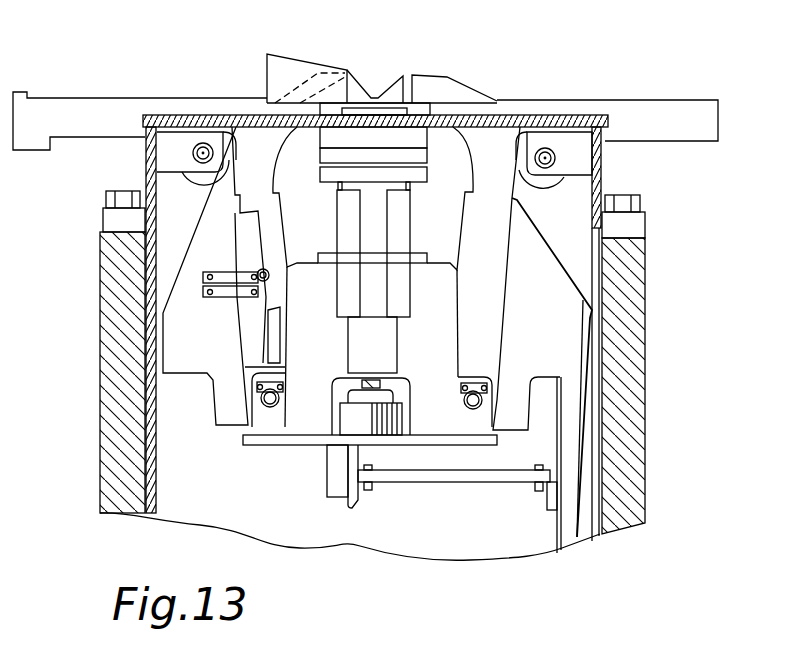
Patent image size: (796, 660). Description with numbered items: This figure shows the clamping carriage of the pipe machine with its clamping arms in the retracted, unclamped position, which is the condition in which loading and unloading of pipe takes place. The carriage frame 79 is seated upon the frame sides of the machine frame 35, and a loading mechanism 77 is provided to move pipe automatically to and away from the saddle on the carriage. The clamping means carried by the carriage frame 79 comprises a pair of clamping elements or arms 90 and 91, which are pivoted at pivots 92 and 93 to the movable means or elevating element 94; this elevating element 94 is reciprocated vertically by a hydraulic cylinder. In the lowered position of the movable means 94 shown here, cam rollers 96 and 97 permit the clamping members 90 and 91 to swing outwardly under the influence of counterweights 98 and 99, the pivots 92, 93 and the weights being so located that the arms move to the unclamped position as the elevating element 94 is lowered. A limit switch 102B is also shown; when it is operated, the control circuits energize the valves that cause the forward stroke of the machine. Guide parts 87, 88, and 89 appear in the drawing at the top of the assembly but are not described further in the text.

The machine frame 35 is at (100, 293).
The loading mechanism 77 is at (110, 189).
The carriage frame 79 is at (601, 187).
The V-notch guide 87 is at (395, 78).
The guide block 88 is at (268, 73).
The inclined guide face 89 is at (345, 69).
The clamping element 90 is at (458, 97).
The clamping element 91 is at (270, 143).
The pivot 92 is at (481, 416).
The pivot 93 is at (266, 406).
The movable means 94 is at (295, 441).
The cam roller 96 is at (528, 127).
The cam roller 97 is at (206, 178).
The counterweight 98 is at (577, 344).
The counterweight 99 is at (197, 360).
The limit switch 102B is at (203, 285).